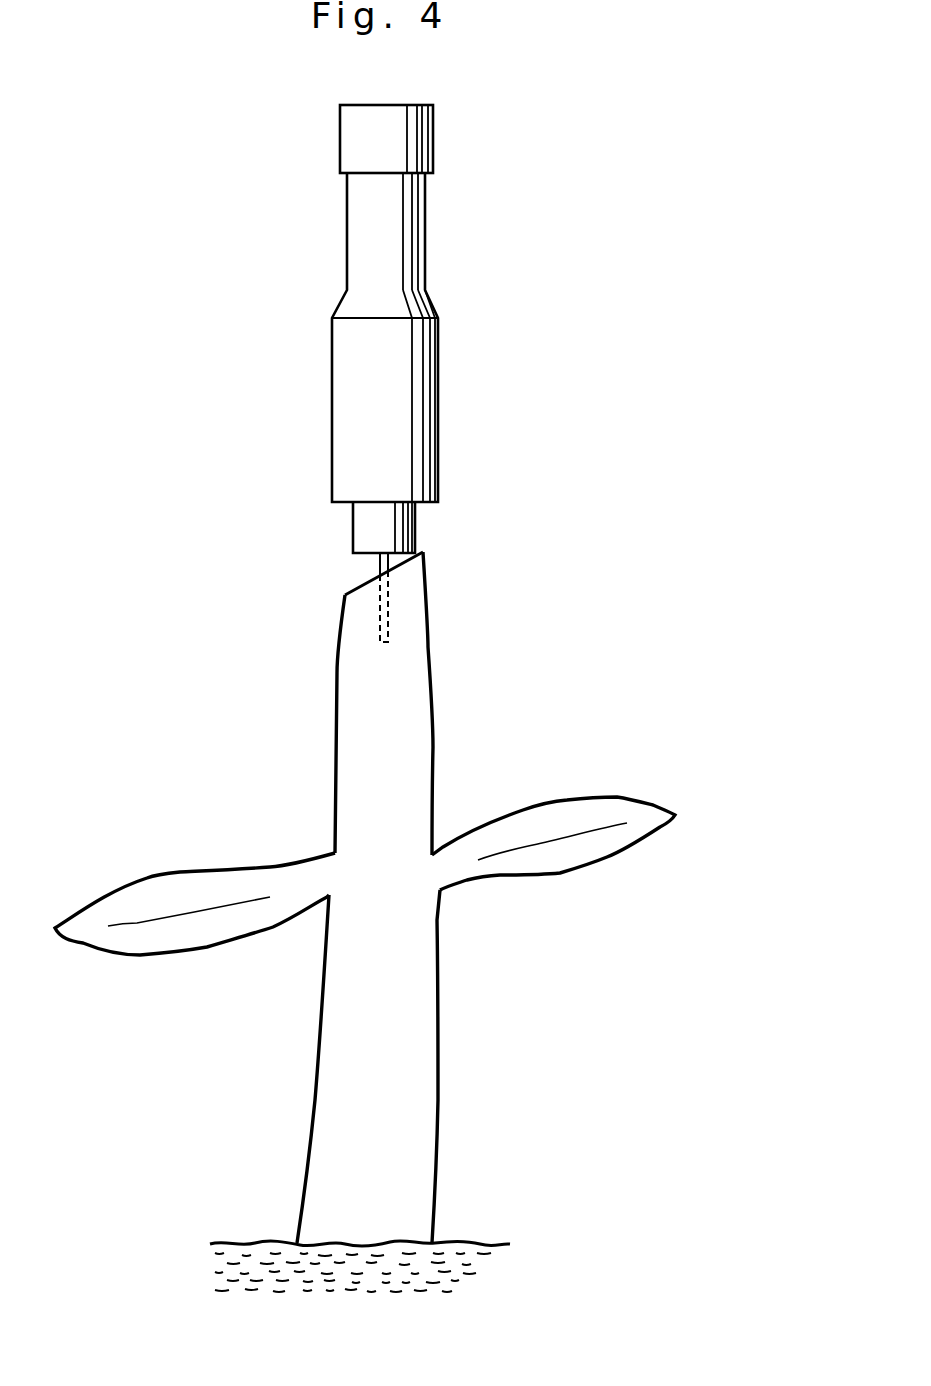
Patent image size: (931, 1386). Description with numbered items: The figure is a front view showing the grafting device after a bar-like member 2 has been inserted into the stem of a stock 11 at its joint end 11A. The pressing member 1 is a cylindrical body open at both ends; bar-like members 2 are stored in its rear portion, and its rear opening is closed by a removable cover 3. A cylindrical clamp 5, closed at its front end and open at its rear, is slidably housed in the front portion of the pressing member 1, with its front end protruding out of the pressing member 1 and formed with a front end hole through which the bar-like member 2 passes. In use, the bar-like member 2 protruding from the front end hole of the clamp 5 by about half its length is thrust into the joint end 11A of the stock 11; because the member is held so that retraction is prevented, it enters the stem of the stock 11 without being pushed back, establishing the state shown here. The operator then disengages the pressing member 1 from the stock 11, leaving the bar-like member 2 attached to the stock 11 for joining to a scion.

The pressing member 1 is at (400, 347).
The bar-like member 2 is at (380, 570).
The removable cover 3 is at (405, 137).
The clamp 5 is at (395, 527).
The stock 11 is at (400, 788).
The joint end 11A is at (362, 582).